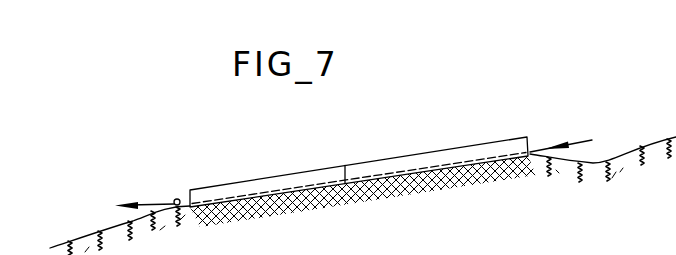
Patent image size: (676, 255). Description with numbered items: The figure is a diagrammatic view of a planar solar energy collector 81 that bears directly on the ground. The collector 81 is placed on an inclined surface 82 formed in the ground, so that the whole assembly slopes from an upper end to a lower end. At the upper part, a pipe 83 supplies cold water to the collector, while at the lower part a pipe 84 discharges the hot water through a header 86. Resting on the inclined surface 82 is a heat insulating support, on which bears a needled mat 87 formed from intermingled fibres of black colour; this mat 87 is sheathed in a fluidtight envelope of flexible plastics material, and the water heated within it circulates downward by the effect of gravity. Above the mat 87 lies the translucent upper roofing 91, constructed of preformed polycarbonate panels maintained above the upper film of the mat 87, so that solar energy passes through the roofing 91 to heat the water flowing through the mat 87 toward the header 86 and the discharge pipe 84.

The planar solar energy collector 81 is at (276, 169).
The inclined surface 82 is at (345, 164).
The pipe 83 is at (573, 143).
The pipe 84 is at (138, 203).
The header 86 is at (177, 198).
The needled mat 87 is at (395, 171).
The translucent upper roofing 91 is at (233, 183).